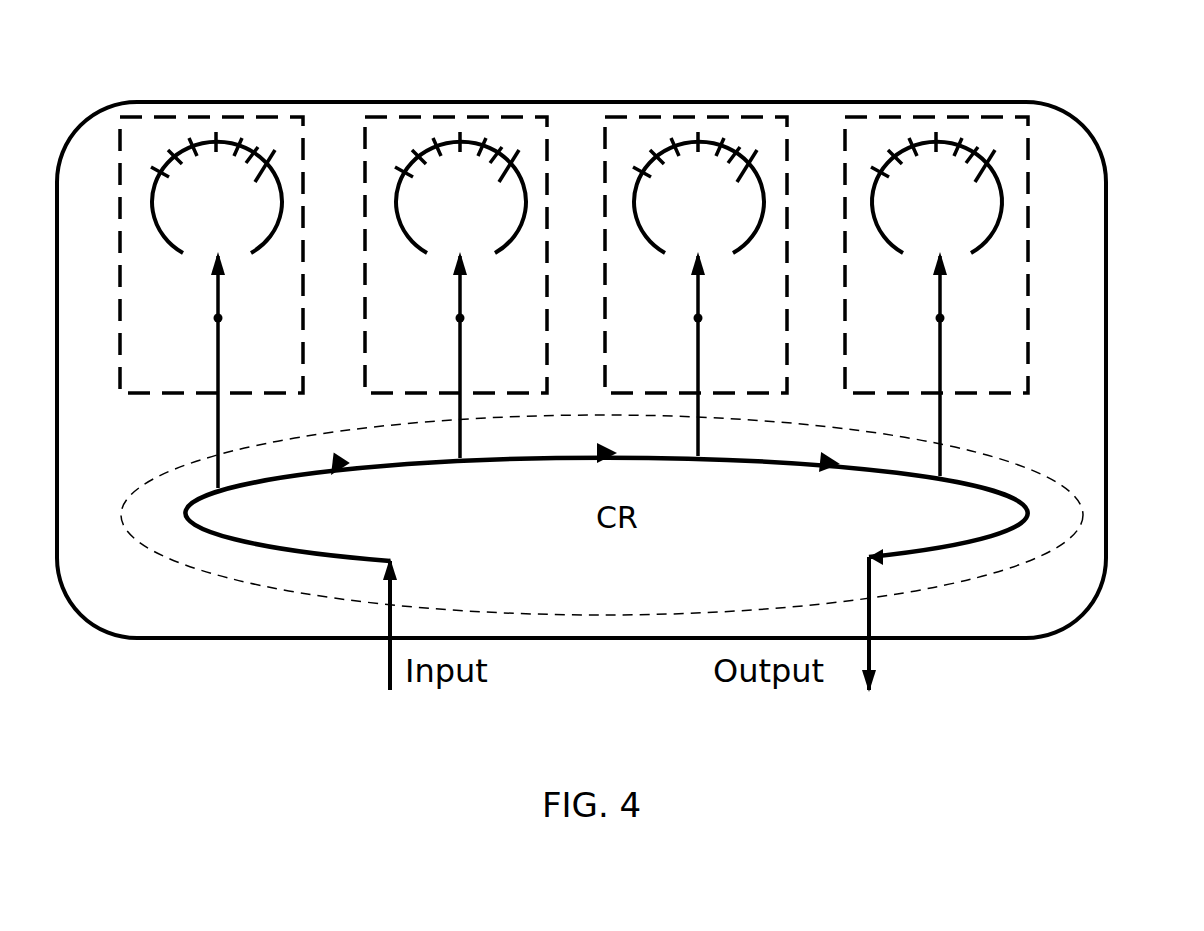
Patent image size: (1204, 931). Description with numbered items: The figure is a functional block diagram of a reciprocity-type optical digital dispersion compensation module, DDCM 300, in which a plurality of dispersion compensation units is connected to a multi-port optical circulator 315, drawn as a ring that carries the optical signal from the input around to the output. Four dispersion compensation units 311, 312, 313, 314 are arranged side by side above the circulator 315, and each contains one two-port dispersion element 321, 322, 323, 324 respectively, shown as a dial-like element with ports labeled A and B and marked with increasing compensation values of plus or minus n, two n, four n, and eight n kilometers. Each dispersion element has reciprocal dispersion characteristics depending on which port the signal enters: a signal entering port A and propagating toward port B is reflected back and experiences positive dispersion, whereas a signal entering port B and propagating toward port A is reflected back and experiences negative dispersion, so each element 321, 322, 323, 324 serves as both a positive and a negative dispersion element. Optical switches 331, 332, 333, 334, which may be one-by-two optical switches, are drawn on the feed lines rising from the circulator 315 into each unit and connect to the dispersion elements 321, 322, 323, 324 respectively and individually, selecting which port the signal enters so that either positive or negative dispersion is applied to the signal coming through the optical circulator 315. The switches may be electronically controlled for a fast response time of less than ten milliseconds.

The DDCM 300 is at (950, 638).
The dispersion compensation unit 311 is at (217, 115).
The dispersion compensation unit 312 is at (463, 113).
The dispersion compensation unit 313 is at (703, 113).
The dispersion compensation unit 314 is at (948, 115).
The optical circulator 315 is at (1067, 495).
The dispersion element 321 is at (263, 163).
The dispersion element 322 is at (508, 163).
The dispersion element 323 is at (747, 163).
The dispersion element 324 is at (983, 163).
The optical switch 331 is at (185, 317).
The optical switch 332 is at (460, 295).
The optical switch 333 is at (698, 295).
The optical switch 334 is at (940, 295).